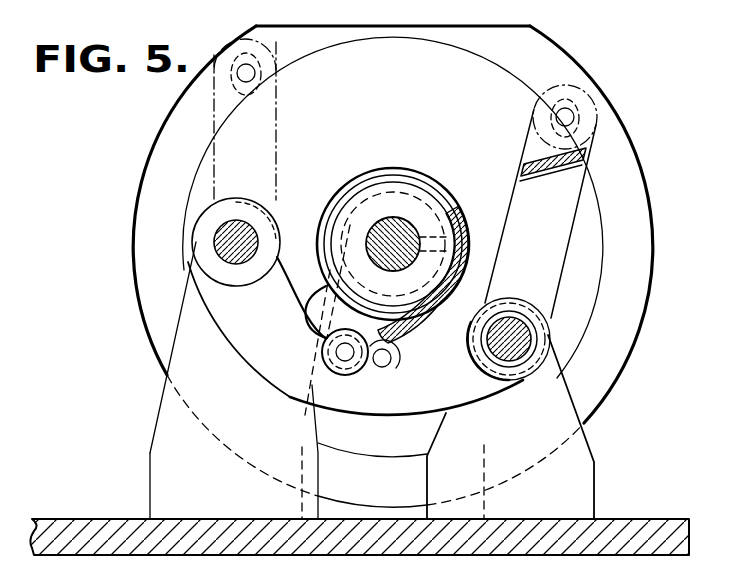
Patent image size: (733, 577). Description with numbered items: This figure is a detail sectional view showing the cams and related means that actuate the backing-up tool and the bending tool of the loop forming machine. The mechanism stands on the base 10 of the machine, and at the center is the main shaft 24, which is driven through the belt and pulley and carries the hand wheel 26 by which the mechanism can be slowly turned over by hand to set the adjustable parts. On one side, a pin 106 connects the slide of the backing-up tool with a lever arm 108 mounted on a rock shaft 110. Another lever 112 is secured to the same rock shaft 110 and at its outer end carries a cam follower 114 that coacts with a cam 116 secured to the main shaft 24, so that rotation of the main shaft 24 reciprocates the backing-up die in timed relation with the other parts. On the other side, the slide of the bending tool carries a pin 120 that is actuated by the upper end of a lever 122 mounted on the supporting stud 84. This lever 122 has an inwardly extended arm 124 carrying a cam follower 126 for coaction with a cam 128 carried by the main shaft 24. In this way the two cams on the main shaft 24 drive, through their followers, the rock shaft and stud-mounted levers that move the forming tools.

The base 10 is at (628, 530).
The hand wheel 26 is at (167, 152).
The main shaft 24 is at (393, 235).
The supporting stud 84 is at (510, 342).
The pin 106 is at (252, 74).
The lever arm 108 is at (274, 108).
The rock shaft 110 is at (228, 243).
The lever 112 is at (262, 352).
The cam follower 114 is at (384, 364).
The cam 116 is at (398, 341).
The pin 120 is at (568, 117).
The lever 122 is at (520, 197).
The arm 124 is at (468, 405).
The cam follower 126 is at (292, 376).
The cam 128 is at (350, 313).